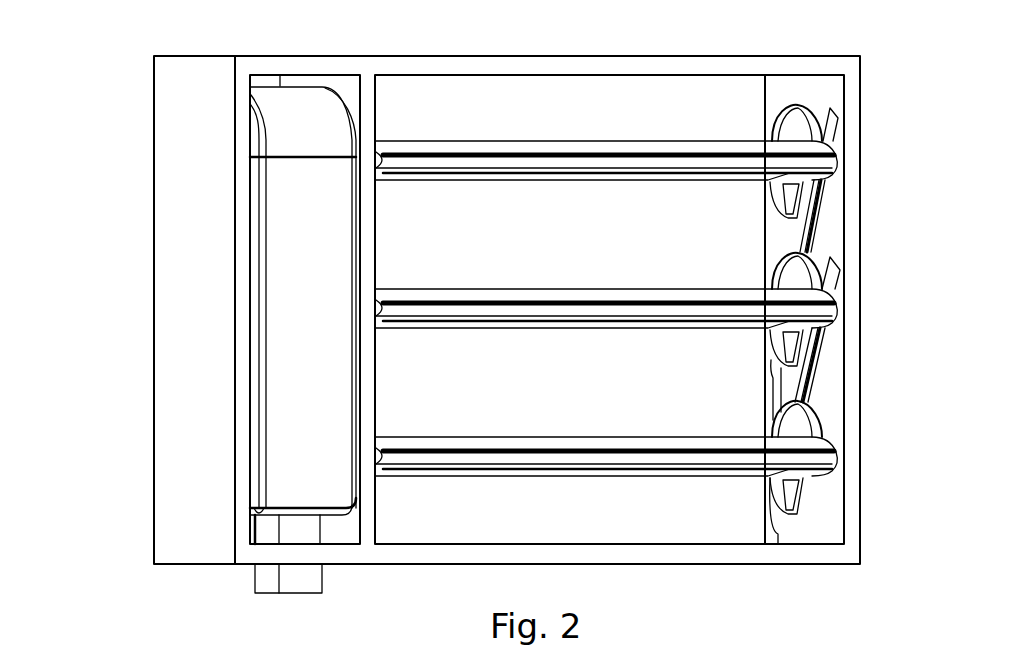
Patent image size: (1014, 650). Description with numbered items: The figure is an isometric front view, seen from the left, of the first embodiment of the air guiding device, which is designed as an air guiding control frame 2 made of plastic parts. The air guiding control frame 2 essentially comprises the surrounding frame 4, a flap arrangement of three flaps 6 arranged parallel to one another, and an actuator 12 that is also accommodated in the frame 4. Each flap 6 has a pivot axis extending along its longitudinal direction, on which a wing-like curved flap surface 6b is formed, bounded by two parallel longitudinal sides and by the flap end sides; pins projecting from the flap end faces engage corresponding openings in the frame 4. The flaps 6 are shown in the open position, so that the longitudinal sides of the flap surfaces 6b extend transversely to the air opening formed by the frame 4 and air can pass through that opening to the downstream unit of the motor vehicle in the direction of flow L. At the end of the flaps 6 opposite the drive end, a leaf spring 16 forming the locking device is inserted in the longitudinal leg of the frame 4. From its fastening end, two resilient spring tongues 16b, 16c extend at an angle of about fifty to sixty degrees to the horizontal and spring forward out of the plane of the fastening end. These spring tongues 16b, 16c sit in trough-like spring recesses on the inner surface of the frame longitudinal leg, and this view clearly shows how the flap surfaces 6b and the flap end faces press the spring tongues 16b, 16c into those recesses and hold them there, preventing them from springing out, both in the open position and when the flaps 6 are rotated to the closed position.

The air guiding control frame 2 is at (126, 48).
The frame 4 is at (178, 292).
The actuator 12 is at (302, 66).
The flap 6 is at (606, 134).
The flap surface 6b is at (648, 148).
The leaf spring 16 is at (819, 309).
The spring tongue 16b is at (812, 207).
The spring tongue 16c is at (812, 362).
The direction of flow L is at (606, 250).